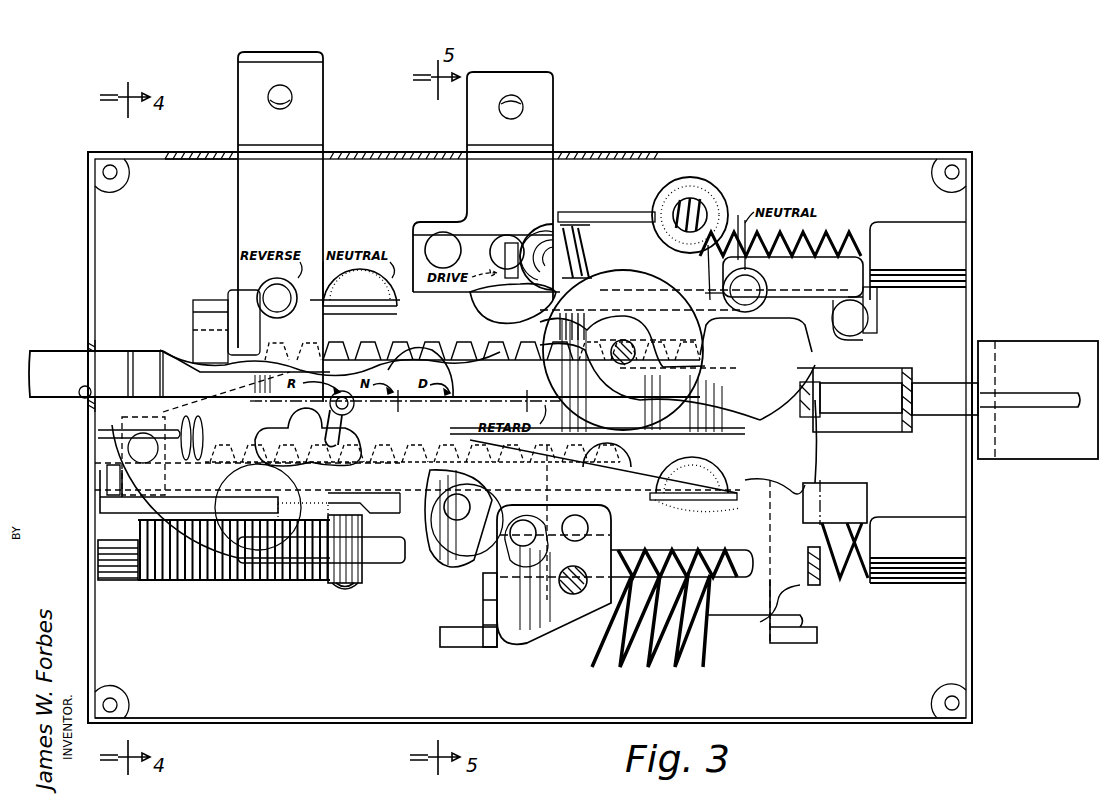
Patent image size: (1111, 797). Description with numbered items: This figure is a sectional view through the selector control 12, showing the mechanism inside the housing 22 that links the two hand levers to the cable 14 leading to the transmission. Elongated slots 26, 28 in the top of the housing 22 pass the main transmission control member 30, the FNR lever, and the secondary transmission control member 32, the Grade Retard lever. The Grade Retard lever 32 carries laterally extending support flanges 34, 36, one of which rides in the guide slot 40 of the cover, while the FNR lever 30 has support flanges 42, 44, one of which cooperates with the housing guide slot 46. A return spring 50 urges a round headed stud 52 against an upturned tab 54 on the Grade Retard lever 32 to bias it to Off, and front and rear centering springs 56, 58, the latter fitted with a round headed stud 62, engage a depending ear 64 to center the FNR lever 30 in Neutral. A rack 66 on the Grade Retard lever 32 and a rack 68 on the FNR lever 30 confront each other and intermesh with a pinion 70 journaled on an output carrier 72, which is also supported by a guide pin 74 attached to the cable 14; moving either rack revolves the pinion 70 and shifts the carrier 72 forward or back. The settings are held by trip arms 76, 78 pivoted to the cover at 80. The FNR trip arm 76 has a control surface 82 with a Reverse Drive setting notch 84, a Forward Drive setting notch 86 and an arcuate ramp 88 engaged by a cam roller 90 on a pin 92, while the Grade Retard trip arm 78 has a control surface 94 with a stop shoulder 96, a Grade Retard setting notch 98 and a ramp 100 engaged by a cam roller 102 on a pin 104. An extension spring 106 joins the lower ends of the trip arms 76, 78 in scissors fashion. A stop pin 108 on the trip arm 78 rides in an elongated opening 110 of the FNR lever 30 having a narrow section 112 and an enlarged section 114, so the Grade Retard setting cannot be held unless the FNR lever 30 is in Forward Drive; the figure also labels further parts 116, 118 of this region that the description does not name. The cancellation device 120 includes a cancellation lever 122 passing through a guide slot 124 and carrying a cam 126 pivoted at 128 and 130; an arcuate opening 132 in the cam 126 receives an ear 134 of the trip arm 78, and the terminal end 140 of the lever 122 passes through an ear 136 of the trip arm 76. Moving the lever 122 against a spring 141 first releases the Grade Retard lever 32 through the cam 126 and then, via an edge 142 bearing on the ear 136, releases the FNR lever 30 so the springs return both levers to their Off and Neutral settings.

The selector control 12 is at (385, 723).
The cable 14 is at (1030, 395).
The housing 22 is at (975, 618).
The elongated slot 26 is at (238, 162).
The elongated slot 28 is at (665, 153).
The main transmission control member 30 is at (300, 62).
The secondary transmission control member 32 is at (553, 80).
The support flange 34 is at (360, 291).
The support flange 36 is at (612, 212).
The guide slot 40 is at (705, 195).
The support flange 42 is at (735, 490).
The support flange 44 is at (235, 492).
The guide slot 46 is at (708, 470).
The return spring 50 is at (742, 220).
The round headed stud 52 is at (555, 225).
The upturned tab 54 is at (512, 235).
The front centering spring 56 is at (727, 578).
The rear centering spring 58 is at (295, 582).
The round headed stud 62 is at (340, 592).
The depending ear 64 is at (384, 565).
The rack 66 is at (450, 368).
The rack 68 is at (598, 440).
The pinion 70 is at (275, 428).
The output carrier 72 is at (350, 418).
The guide pin 74 is at (938, 410).
The trip arm 76 is at (227, 300).
The trip arm 78 is at (925, 265).
The pivot 80 is at (555, 400).
The control surface 82 is at (325, 262).
The Reverse Drive setting notch 84 is at (200, 305).
The Forward Drive setting notch 86 is at (520, 322).
The arcuate ramp 88 is at (425, 245).
The cam roller 90 is at (262, 283).
The pin 92 is at (210, 331).
The control surface 94 is at (835, 300).
The stop shoulder 96 is at (722, 292).
The Grade Retard setting notch 98 is at (866, 333).
The ramp 100 is at (795, 285).
The cam roller 102 is at (718, 286).
The pin 104 is at (745, 330).
The extension spring 106 is at (703, 655).
The stop pin 108 is at (468, 540).
The elongated opening 110 is at (345, 583).
The narrow section 112 is at (425, 560).
The enlarged section 114 is at (260, 565).
The lever 116 is at (195, 357).
The rack bar 118 is at (260, 372).
The cancellation device 120 is at (41, 346).
The cancellation lever 122 is at (130, 352).
The guide slot 124 is at (78, 395).
The cam 126 is at (527, 645).
The pivot 128 is at (560, 582).
The pivot 130 is at (590, 528).
The arcuate opening 132 is at (460, 628).
The ear 134 is at (487, 648).
The ear 136 is at (822, 582).
The terminal end 140 is at (867, 493).
The spring 141 is at (125, 430).
The edge 142 is at (808, 535).